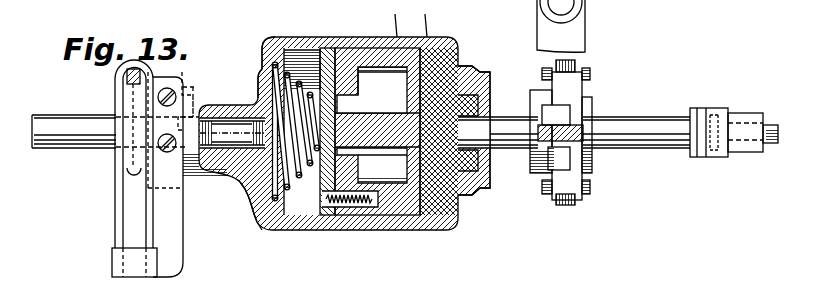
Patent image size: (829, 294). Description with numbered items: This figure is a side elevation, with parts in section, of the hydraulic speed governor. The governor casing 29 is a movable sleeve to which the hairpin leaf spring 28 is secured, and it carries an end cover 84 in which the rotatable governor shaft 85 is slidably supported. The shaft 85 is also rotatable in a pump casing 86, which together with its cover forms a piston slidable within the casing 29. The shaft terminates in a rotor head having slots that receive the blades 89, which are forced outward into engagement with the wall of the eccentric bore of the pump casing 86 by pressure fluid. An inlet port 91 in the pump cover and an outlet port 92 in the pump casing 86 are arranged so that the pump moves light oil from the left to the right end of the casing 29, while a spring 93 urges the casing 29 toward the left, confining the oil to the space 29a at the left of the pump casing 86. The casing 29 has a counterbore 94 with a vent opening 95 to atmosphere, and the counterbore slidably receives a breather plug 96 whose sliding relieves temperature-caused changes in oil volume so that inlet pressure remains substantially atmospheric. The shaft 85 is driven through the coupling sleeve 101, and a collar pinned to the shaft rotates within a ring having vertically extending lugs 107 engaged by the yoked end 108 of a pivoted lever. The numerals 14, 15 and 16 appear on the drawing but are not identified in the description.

The housing 14 is at (318, 36).
The housing part 15 is at (423, 18).
The housing part 16 is at (397, 18).
The hairpin leaf spring 28 is at (118, 97).
The governor casing 29 is at (271, 41).
The space 29a is at (268, 212).
The end cover 84 is at (460, 73).
The governor shaft 85 is at (503, 125).
The pump casing 86 is at (371, 116).
The blades 89 is at (384, 82).
The inlet port 91 is at (330, 48).
The outlet port 92 is at (404, 168).
The spring 93 is at (276, 66).
The counterbore 94 is at (204, 118).
The vent opening 95 is at (182, 72).
The breather plug 96 is at (231, 139).
The coupling sleeve 101 is at (716, 112).
The lugs 107 is at (571, 65).
The yoked end 108 is at (576, 98).